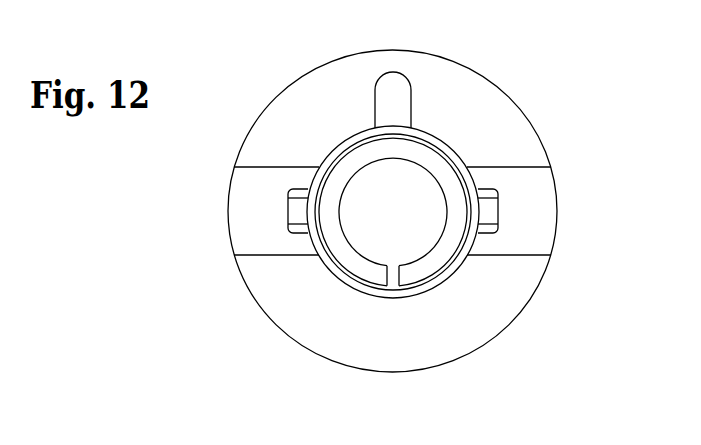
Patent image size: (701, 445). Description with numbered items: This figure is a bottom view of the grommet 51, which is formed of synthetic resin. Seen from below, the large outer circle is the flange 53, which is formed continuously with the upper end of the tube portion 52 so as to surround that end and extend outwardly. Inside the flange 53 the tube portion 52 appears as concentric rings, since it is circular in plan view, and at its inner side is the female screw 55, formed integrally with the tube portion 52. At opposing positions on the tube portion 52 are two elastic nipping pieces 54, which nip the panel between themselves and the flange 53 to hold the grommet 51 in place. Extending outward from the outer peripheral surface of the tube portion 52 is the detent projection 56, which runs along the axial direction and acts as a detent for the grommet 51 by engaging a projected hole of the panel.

The grommet 51 is at (556, 277).
The tube portion 52 is at (332, 147).
The flange 53 is at (490, 113).
The elastic nipping pieces 54 is at (292, 212).
The female screw 55 is at (342, 250).
The detent projection 56 is at (393, 98).